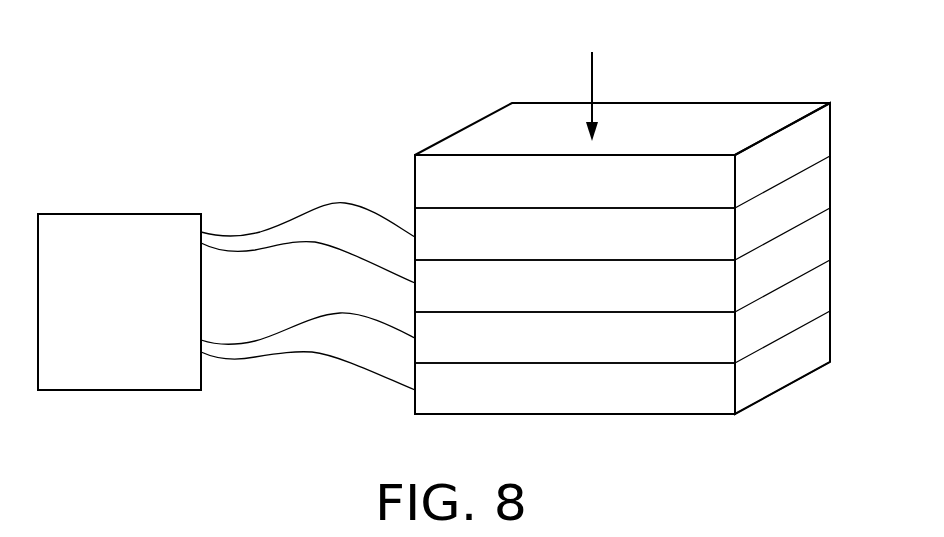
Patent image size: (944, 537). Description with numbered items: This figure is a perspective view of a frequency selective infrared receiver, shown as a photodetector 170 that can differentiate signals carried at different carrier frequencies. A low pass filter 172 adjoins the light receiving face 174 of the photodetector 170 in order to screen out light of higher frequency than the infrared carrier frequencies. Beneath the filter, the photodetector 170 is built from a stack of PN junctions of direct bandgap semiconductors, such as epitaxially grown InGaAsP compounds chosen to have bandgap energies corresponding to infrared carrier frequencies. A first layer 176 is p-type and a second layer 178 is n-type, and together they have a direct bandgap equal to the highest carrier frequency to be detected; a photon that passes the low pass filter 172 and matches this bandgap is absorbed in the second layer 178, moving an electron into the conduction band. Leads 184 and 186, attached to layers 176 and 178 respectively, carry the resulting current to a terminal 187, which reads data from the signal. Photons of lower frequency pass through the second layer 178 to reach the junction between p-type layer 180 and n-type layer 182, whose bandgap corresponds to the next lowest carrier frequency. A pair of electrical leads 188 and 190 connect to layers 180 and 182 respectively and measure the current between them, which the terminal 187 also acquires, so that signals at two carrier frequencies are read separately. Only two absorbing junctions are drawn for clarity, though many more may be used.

The photodetector 170 is at (318, 156).
The low pass filter 172 is at (818, 147).
The light receiving face 174 is at (424, 207).
The first layer 176 is at (818, 198).
The second layer 178 is at (818, 247).
The p-type layer 180 is at (818, 300).
The n-type layer 182 is at (818, 352).
The lead 184 is at (246, 229).
The lead 186 is at (251, 258).
The terminal 187 is at (145, 391).
The electrical lead 188 is at (302, 321).
The electrical lead 190 is at (313, 354).